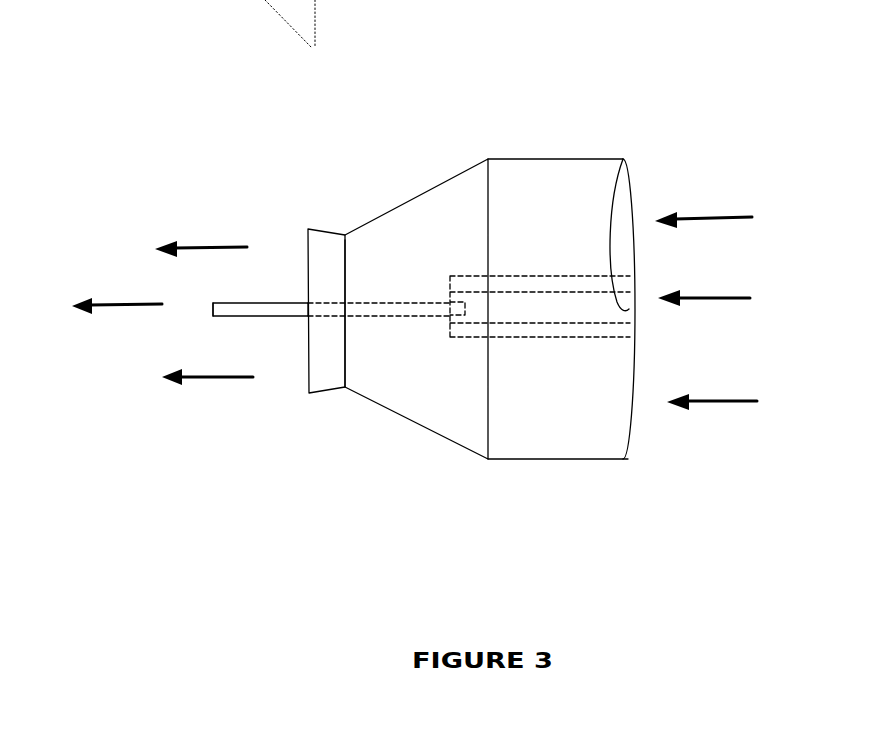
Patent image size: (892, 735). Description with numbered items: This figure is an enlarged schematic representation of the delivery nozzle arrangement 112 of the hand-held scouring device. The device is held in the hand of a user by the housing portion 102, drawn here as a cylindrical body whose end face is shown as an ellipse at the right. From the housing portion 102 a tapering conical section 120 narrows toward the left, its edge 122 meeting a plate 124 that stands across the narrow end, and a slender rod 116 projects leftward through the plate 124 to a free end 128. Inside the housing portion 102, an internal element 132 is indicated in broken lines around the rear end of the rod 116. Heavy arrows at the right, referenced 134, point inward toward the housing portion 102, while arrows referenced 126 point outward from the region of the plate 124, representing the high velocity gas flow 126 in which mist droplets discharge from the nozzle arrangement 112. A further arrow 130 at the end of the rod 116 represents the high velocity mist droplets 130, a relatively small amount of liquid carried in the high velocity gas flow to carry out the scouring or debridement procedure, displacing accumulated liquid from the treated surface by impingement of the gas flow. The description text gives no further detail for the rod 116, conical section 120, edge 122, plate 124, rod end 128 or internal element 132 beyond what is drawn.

The housing portion 102 is at (587, 448).
The nozzle arrangement 112 is at (485, 104).
The rod 116 is at (295, 320).
The conical section 120 is at (438, 418).
The cone base edge 122 is at (347, 353).
The plate 124 is at (307, 252).
The high velocity gas flow 126 is at (203, 247).
The rod end 128 is at (205, 305).
The high velocity mist droplets 130 is at (127, 308).
The internal mechanism (dashed) 132 is at (697, 300).
The inward force arrows 134 is at (690, 217).